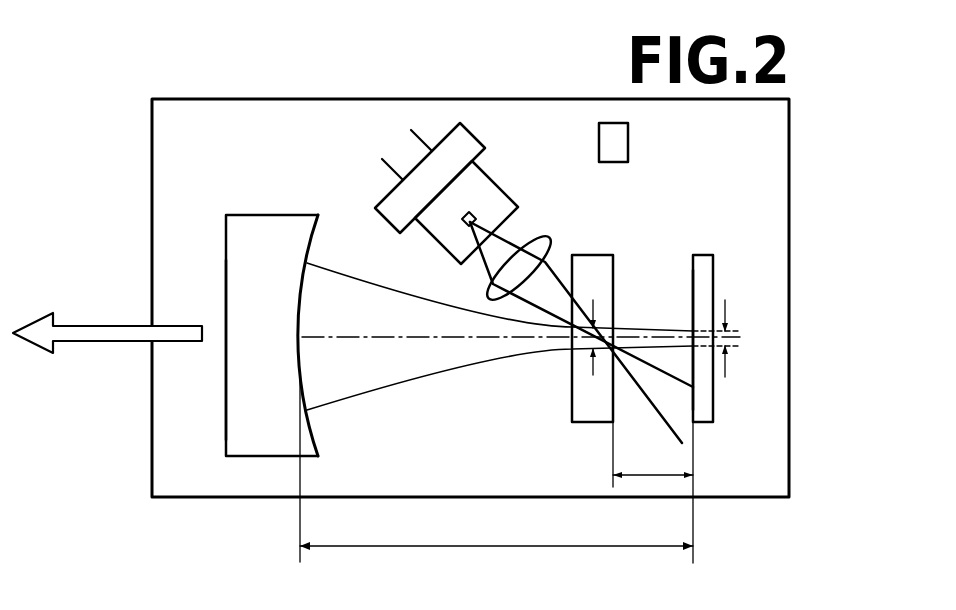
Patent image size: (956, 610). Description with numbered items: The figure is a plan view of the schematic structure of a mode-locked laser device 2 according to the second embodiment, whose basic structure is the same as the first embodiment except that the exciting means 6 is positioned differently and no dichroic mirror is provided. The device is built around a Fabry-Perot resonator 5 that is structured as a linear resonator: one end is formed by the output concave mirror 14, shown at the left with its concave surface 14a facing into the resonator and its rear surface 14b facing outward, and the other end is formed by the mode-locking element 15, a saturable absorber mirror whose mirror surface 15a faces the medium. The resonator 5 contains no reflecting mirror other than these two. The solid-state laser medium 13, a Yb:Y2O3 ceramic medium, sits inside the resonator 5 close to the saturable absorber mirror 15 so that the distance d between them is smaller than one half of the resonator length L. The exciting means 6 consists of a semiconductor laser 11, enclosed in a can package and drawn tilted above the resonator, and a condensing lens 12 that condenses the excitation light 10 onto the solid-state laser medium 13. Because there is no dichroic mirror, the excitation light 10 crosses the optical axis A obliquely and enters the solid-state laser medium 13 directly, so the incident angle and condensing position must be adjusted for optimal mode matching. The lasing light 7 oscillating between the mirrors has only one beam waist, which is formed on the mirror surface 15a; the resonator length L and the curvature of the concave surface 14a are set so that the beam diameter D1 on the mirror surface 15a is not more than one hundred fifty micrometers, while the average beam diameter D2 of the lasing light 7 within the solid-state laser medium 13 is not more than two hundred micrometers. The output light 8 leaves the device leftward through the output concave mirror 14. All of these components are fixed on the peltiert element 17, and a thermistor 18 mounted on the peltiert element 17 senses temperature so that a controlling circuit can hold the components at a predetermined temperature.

The mode-locked laser device 2 is at (105, 64).
The Fabry-Perot resonator 5 is at (340, 181).
The exciting means 6 is at (456, 195).
The lasing light 7 is at (392, 382).
The output light 8 is at (93, 342).
The excitation light 10 is at (557, 274).
The semiconductor laser 11 is at (466, 223).
The condensing lens 12 is at (538, 238).
The solid-state laser medium 13 is at (604, 255).
The output concave mirror 14 is at (285, 320).
The concave surface 14a is at (312, 428).
The rear surface of concave mirror 14b is at (224, 405).
The mode-locking element 15 is at (703, 424).
The mirror surface 15a is at (693, 272).
The peltiert element 17 is at (778, 181).
The thermistor 18 is at (625, 143).
The optical axis A is at (352, 336).
The beam diameter on mirror surface D1 is at (732, 338).
The average beam diameter within laser medium D2 is at (592, 368).
The distance between laser medium and saturable absorber mirror d is at (653, 492).
The resonator length L is at (496, 471).